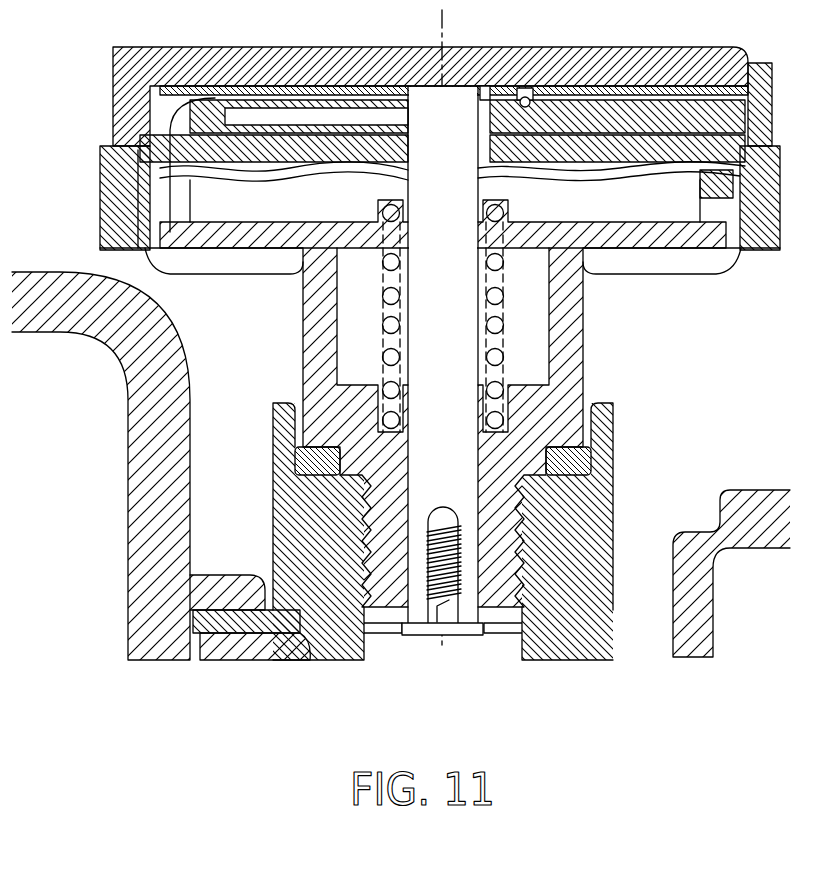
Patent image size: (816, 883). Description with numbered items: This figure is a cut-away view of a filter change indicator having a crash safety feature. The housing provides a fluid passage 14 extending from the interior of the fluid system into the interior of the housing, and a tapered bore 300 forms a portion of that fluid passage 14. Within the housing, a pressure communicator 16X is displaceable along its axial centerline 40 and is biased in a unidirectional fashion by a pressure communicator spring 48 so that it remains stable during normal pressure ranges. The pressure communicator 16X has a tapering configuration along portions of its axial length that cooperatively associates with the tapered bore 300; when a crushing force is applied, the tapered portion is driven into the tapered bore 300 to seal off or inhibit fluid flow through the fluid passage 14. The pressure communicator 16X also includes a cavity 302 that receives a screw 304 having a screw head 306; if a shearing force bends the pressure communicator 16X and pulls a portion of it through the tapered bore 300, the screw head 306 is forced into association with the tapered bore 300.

The fluid passage 14 is at (535, 588).
The pressure communicator 16X is at (457, 430).
The axial centerline 40 is at (443, 467).
The pressure communicator spring 48 is at (500, 325).
The tapered bore 300 is at (518, 447).
The cavity 302 is at (520, 507).
The screw 304 is at (457, 573).
The screw head 306 is at (463, 628).